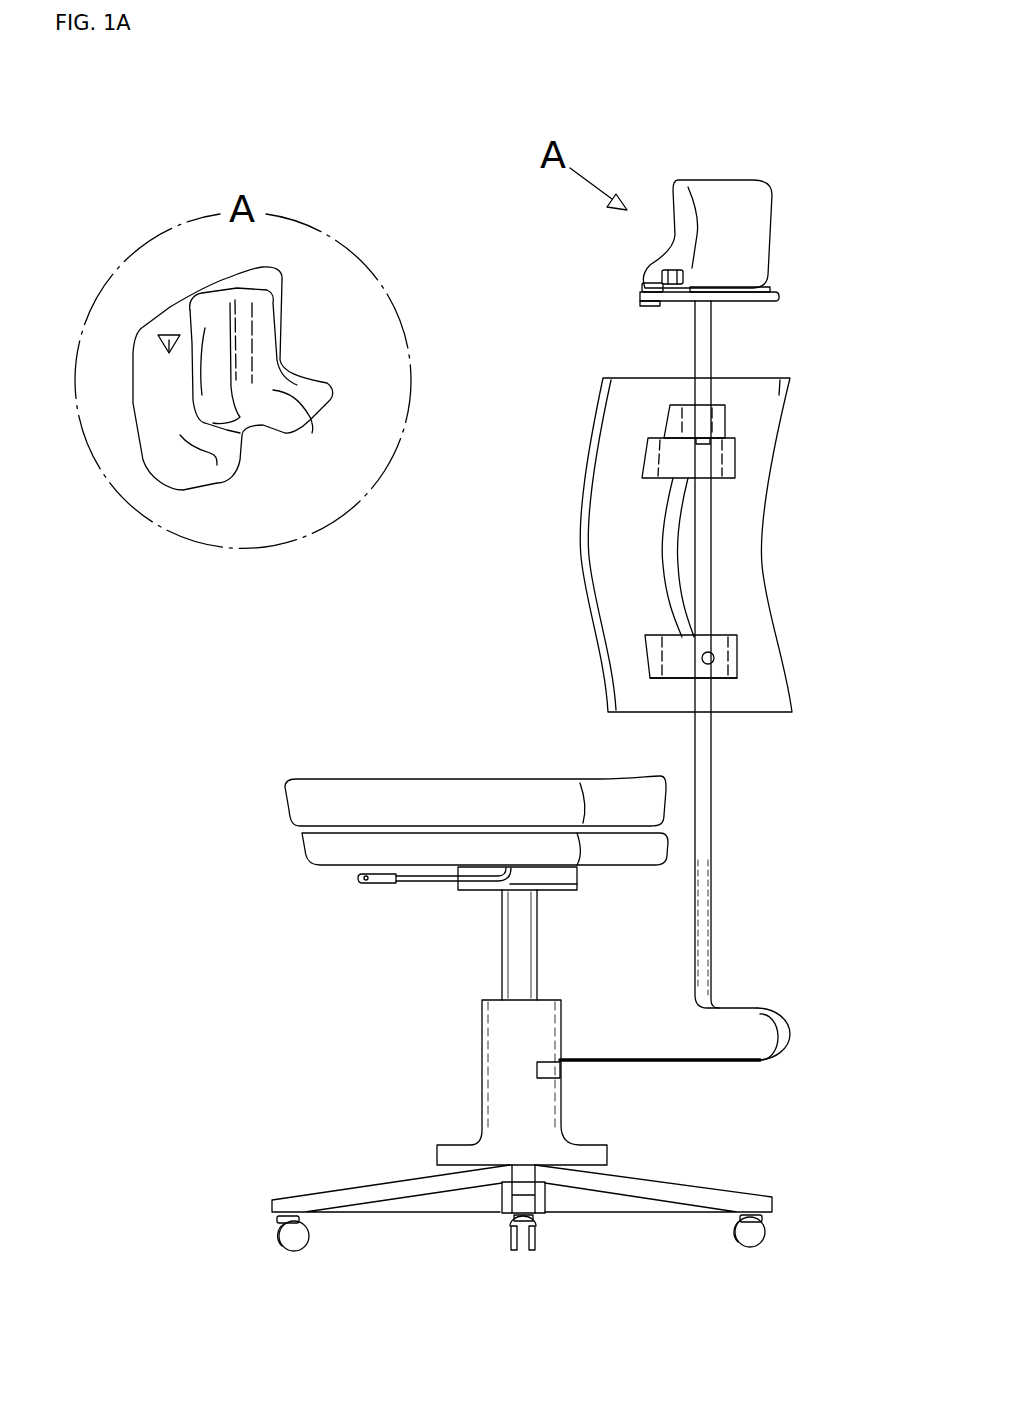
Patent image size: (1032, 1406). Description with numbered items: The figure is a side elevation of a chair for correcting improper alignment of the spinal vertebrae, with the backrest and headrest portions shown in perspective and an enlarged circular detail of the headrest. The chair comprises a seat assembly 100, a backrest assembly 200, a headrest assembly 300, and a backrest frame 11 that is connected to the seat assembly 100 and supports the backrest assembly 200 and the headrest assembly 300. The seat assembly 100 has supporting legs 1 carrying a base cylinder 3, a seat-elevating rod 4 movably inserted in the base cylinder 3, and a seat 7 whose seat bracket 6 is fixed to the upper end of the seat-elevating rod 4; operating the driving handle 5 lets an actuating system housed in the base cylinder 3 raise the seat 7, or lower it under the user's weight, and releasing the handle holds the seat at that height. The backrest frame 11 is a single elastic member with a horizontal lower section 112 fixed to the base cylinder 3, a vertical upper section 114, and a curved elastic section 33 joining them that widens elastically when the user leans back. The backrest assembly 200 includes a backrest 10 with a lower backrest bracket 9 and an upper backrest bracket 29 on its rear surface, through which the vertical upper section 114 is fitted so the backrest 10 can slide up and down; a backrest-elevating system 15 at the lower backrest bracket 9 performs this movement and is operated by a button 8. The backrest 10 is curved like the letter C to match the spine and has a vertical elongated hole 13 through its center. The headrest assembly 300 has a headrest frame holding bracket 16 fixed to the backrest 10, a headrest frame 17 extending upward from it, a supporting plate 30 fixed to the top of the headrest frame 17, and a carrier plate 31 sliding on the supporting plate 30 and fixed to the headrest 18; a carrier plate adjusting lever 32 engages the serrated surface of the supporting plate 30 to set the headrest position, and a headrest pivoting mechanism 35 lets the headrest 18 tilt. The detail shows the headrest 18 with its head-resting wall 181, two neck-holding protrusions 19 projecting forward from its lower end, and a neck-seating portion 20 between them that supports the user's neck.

The supporting legs 1 is at (713, 1190).
The base cylinder 3 is at (488, 1065).
The seat-elevating rod 4 is at (507, 922).
The driving handle 5 is at (380, 885).
The seat bracket 6 is at (565, 890).
The seat 7 is at (393, 779).
The button 8 is at (718, 657).
The lower backrest bracket 9 is at (733, 675).
The backrest 10 is at (590, 473).
The backrest frame 11 is at (713, 772).
The vertical elongated hole 13 is at (670, 552).
The backrest-elevating system 15 is at (740, 634).
The headrest frame holding bracket 16 is at (717, 422).
The headrest frame 17 is at (707, 330).
The headrest 18 is at (762, 233).
The neck-holding protrusions 19 is at (310, 410).
The neck-seating portion 20 is at (257, 437).
The upper backrest bracket 29 is at (723, 470).
The supporting plate 30 is at (643, 302).
The carrier plate 31 is at (777, 287).
The carrier plate adjusting lever 32 is at (635, 285).
The curved elastic section 33 is at (783, 1040).
The headrest pivoting mechanism 35 is at (663, 277).
The seat assembly 100 is at (485, 974).
The horizontal lower section 112 is at (608, 1060).
The vertical upper section 114 is at (713, 908).
The head-resting wall 181 is at (212, 325).
The backrest assembly 200 is at (713, 709).
The headrest assembly 300 is at (533, 339).